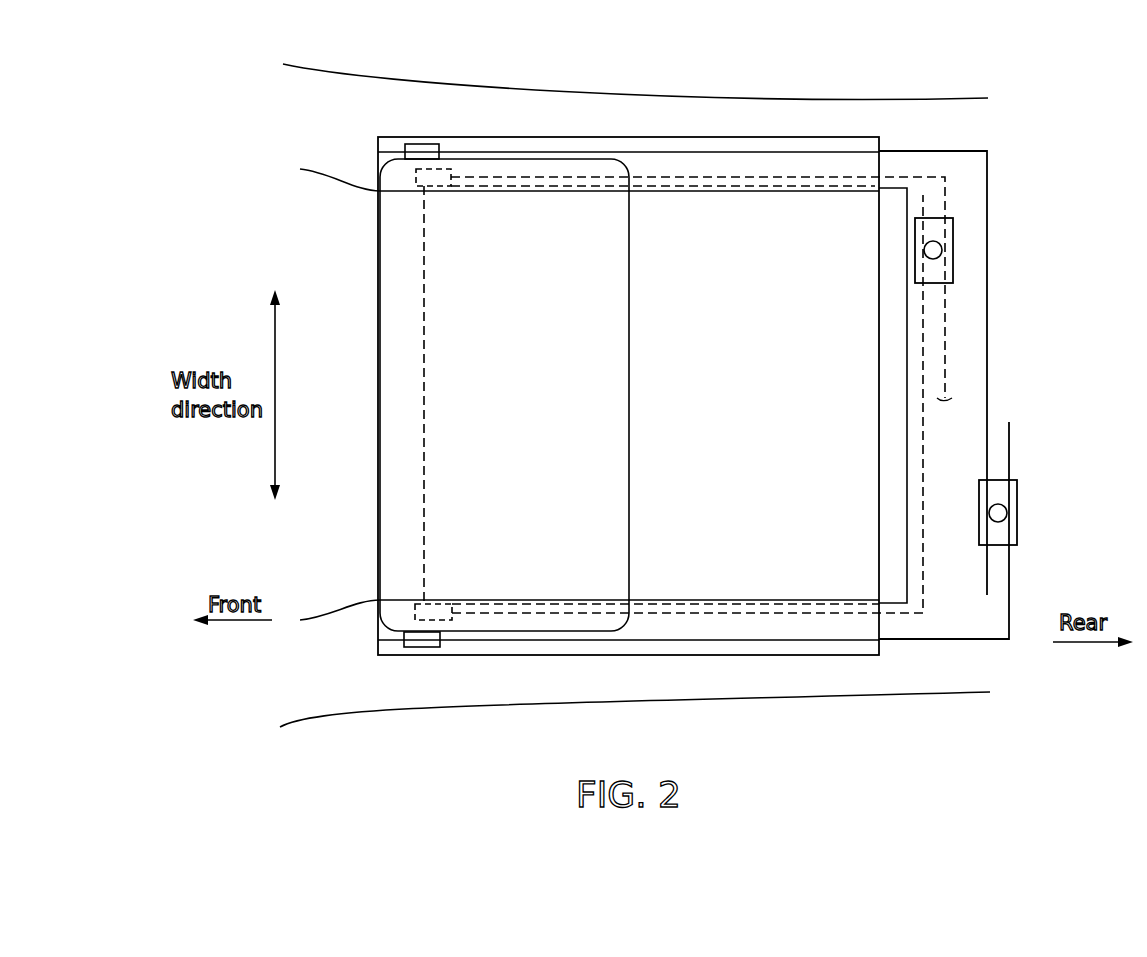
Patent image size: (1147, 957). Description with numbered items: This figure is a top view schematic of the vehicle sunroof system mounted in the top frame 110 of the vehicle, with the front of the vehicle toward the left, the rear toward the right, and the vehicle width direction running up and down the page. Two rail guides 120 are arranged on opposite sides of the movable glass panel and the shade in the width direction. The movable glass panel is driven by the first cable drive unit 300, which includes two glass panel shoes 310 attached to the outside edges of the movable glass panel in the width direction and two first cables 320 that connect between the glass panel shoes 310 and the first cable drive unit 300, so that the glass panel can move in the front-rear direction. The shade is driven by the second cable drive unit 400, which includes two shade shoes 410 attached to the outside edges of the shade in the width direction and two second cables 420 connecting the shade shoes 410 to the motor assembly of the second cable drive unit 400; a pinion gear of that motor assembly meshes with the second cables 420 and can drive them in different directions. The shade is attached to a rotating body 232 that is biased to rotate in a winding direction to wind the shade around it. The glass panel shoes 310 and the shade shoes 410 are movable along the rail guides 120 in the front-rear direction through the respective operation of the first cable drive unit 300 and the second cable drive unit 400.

The top frame 110 is at (306, 95).
The rail guides 120 is at (637, 137).
The glass panel shoes 310 is at (405, 153).
The first cables 320 is at (925, 150).
The rotating body 232 is at (890, 582).
The shade shoes 410 is at (433, 180).
The second cables 420 is at (722, 178).
The second cable drive unit 400 is at (970, 233).
The first cable drive unit 300 is at (1034, 496).